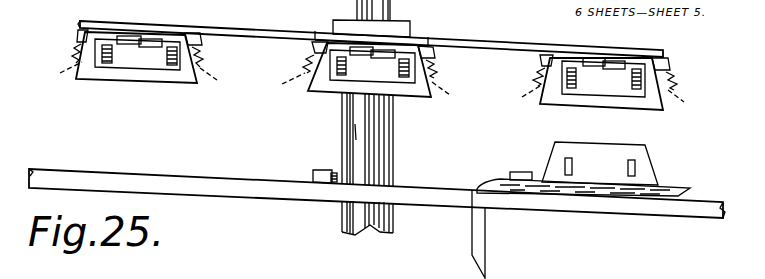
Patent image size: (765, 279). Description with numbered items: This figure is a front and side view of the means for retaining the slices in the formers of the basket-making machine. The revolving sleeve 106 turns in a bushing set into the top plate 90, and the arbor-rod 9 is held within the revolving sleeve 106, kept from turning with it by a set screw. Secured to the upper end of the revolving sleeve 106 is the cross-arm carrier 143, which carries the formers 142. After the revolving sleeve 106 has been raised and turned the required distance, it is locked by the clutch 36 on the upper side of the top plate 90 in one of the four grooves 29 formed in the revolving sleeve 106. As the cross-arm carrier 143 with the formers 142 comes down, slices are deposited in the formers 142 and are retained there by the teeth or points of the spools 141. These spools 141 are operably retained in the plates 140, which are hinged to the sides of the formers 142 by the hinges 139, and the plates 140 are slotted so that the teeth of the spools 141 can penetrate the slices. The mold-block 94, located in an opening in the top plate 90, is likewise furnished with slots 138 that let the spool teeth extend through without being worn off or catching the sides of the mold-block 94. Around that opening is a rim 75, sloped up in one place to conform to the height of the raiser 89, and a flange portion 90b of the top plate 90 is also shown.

The arbor-rod 9 is at (391, 8).
The grooves 29 is at (360, 131).
The clutch 36 is at (318, 170).
The rim 75 is at (526, 172).
The raiser 89 is at (499, 180).
The top plate 90 is at (377, 193).
The rail flange 90b is at (486, 250).
The mold-block 94 is at (600, 165).
The revolving sleeve 106 is at (397, 157).
The slots 138 is at (628, 160).
The hinges 139 is at (679, 63).
The plates 140 is at (695, 82).
The spools 141 is at (72, 68).
The formers 142 is at (153, 80).
The cross-arm carrier 143 is at (438, 40).